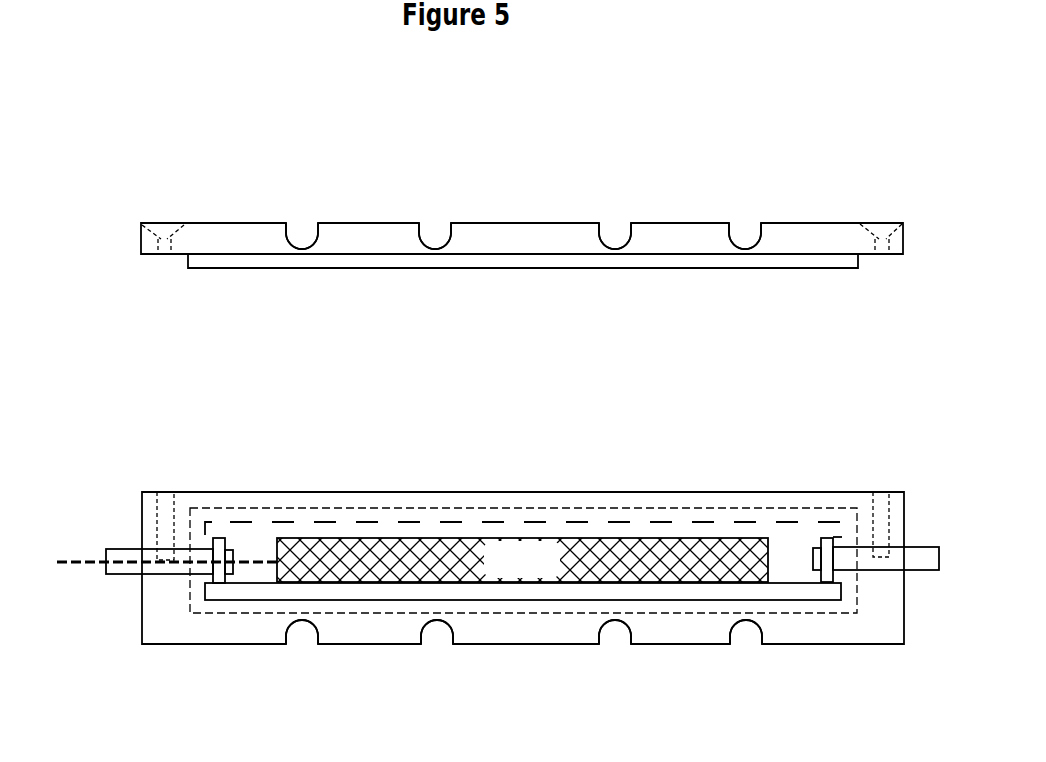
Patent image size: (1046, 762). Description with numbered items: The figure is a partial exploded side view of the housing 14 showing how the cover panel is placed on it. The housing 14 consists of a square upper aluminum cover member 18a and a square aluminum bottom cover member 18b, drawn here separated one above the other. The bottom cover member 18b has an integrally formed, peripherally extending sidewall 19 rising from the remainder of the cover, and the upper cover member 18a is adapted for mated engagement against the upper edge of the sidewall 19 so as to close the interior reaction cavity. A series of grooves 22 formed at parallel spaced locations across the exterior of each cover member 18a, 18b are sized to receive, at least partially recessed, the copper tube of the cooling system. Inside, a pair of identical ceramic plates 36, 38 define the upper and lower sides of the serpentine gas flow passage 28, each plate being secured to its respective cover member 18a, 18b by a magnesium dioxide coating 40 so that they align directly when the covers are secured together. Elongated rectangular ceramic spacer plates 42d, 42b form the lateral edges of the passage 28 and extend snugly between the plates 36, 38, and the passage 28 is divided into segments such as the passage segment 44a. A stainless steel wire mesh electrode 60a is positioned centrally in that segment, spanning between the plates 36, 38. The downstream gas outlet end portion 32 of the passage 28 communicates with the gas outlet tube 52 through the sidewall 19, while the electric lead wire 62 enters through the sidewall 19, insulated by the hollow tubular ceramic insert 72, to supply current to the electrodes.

The housing 14 is at (625, 282).
The upper aluminum cover member 18a is at (522, 238).
The bottom cover member 18b is at (523, 568).
The sidewall 19 is at (132, 614).
The grooves 22 is at (302, 230).
The gas flow passage 28 is at (266, 547).
The downstream gas outlet end portion 32 is at (797, 563).
The ceramic plate 36 is at (380, 272).
The ceramic plate 38 is at (535, 592).
The magnesium dioxide coating 40 is at (367, 605).
The ceramic spacer plate 42b is at (828, 550).
The ceramic spacer plate 42d is at (220, 545).
The passage segment 44a is at (785, 552).
The gas outlet tube 52 is at (920, 566).
The wire mesh electrode 60a is at (522, 560).
The electric lead wire 62 is at (60, 556).
The hollow tubular ceramic insert 72 is at (121, 548).